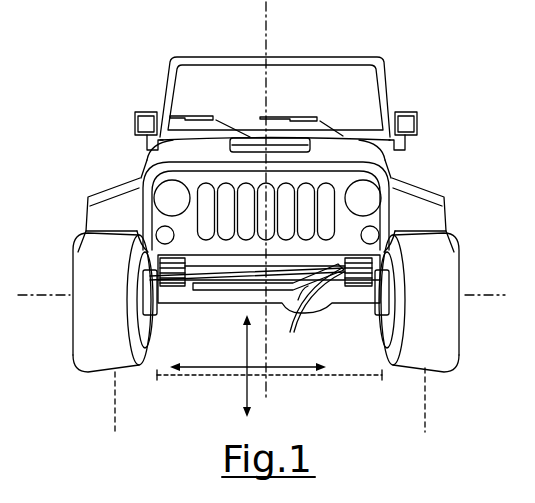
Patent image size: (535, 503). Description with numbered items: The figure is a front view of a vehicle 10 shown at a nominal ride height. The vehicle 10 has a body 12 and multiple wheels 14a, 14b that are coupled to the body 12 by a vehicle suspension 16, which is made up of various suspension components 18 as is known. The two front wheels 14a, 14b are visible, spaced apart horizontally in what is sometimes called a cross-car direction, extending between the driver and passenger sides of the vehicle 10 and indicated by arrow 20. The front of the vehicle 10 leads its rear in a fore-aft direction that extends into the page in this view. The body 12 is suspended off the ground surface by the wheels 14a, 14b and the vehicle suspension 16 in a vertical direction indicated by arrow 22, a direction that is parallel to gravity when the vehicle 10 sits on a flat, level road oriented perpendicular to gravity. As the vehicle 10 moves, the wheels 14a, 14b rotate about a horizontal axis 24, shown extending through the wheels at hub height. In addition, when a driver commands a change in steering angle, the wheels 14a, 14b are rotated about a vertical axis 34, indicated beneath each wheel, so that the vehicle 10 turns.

The vehicle 10 is at (95, 66).
The body 12 is at (402, 166).
The front wheel 14a is at (100, 345).
The front wheel 14b is at (440, 338).
The vehicle suspension 16 is at (335, 320).
The suspension components 18 is at (247, 311).
The arrow 20 is at (205, 377).
The arrow 22 is at (244, 349).
The horizontal axis 24 is at (46, 294).
The vertical axis 34 is at (110, 398).